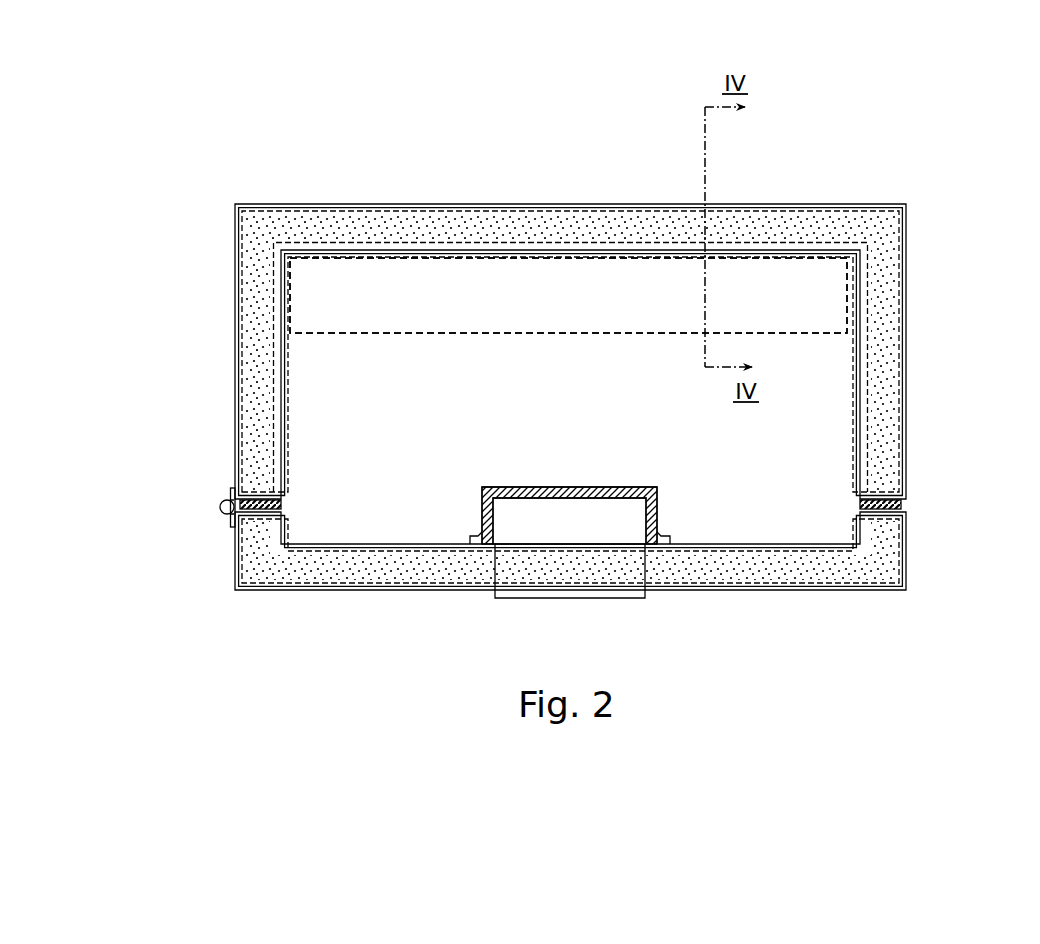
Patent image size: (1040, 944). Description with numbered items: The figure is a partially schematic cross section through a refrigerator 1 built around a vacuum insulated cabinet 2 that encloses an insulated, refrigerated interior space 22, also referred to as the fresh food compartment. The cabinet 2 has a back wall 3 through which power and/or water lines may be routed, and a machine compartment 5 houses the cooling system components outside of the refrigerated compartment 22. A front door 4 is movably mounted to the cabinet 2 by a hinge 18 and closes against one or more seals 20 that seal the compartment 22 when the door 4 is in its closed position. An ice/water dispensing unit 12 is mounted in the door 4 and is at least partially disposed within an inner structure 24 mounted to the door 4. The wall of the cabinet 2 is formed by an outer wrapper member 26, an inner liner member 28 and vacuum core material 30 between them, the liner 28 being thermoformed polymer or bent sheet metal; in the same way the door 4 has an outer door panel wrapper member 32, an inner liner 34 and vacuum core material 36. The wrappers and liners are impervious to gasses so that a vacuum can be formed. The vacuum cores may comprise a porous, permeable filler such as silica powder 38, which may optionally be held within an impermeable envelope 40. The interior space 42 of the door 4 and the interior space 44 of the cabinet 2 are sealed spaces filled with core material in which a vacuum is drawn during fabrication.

The refrigerator 1 is at (930, 212).
The insulated cabinet 2 is at (910, 312).
The back wall 3 is at (745, 205).
The front door 4 is at (763, 592).
The machine compartment 5 is at (850, 284).
The ice/water dispensing unit 12 is at (500, 598).
The hinge 18 is at (229, 522).
The seal 20 is at (283, 506).
The refrigerated interior space 22 is at (567, 397).
The inner structure 24 is at (615, 487).
The outer wrapper member 26 is at (383, 204).
The inner liner member 28 is at (403, 255).
The vacuum core material 30 is at (515, 220).
The outer door panel wrapper member 32 is at (348, 590).
The inner liner 34 is at (345, 541).
The vacuum core material 36 is at (312, 568).
The silica powder 38 is at (494, 220).
The impermeable envelope 40 is at (598, 212).
The interior space of door 42 is at (676, 575).
The interior space of cabinet 44 is at (800, 222).